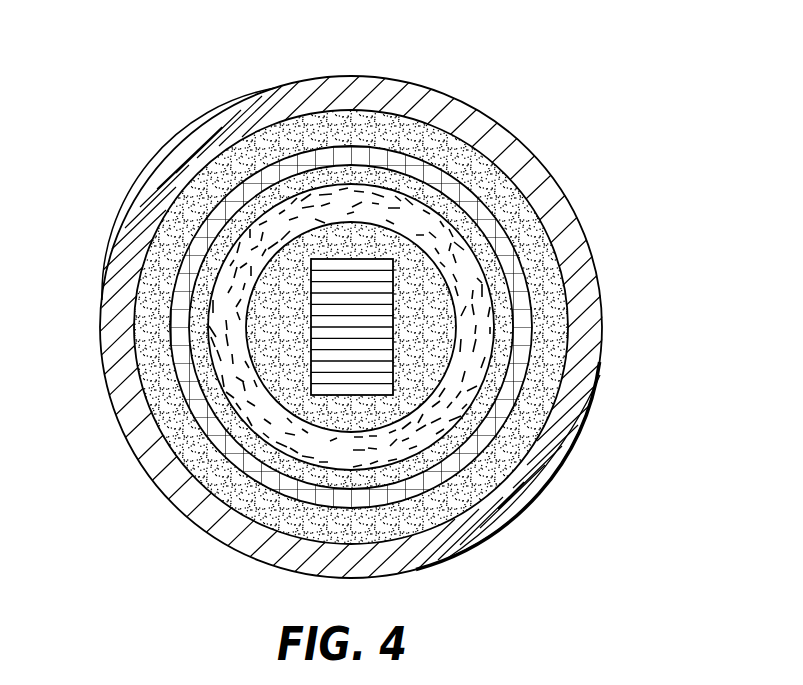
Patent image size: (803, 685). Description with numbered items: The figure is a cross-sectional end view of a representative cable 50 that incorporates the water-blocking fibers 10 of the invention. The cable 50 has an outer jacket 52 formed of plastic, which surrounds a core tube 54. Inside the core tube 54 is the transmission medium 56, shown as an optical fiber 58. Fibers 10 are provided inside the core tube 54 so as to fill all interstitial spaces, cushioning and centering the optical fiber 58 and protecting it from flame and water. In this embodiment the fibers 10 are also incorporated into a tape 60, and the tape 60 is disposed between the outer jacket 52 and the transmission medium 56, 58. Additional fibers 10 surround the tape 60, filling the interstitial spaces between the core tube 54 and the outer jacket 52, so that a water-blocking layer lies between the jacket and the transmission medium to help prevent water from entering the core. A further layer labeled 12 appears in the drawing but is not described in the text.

The cable 50 is at (488, 85).
The outer jacket 52 is at (542, 153).
The core tube 54 is at (473, 247).
The transmission medium 56 is at (400, 355).
The optical fiber 58 is at (382, 323).
The tape 60 is at (517, 422).
The fibers 10 is at (278, 348).
The shield tape layer 12 is at (187, 418).